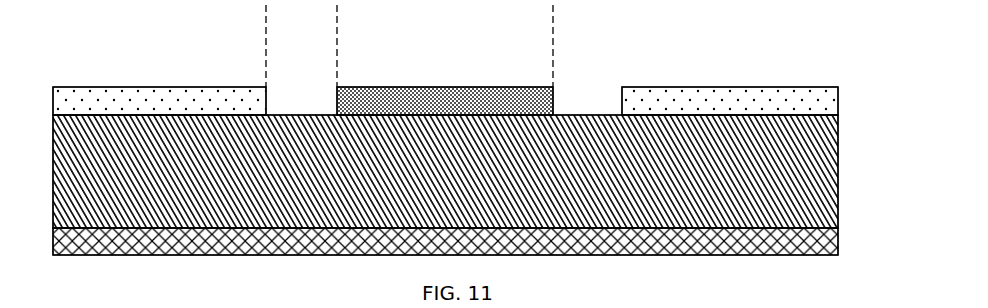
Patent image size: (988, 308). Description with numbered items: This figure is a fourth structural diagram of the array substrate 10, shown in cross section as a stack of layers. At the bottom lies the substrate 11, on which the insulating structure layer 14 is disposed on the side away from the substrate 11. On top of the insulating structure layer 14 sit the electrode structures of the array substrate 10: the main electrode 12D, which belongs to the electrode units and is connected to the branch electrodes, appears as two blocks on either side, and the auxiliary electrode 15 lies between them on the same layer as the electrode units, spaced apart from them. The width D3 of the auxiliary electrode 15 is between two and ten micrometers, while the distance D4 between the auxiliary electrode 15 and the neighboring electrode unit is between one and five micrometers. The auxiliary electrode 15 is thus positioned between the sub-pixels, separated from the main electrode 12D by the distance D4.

The array substrate 10 is at (467, 129).
The substrate 11 is at (823, 237).
The main electrode 12D is at (817, 105).
The insulating structure layer 14 is at (820, 178).
The auxiliary electrode 15 is at (553, 84).
The width of the auxiliary electrode D3 is at (553, 25).
The distance between the auxiliary electrode and the electrode units D4 is at (337, 25).